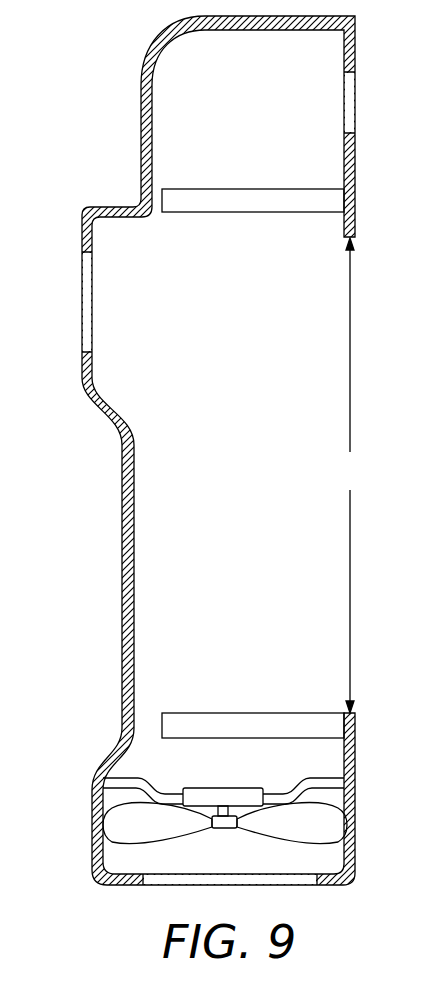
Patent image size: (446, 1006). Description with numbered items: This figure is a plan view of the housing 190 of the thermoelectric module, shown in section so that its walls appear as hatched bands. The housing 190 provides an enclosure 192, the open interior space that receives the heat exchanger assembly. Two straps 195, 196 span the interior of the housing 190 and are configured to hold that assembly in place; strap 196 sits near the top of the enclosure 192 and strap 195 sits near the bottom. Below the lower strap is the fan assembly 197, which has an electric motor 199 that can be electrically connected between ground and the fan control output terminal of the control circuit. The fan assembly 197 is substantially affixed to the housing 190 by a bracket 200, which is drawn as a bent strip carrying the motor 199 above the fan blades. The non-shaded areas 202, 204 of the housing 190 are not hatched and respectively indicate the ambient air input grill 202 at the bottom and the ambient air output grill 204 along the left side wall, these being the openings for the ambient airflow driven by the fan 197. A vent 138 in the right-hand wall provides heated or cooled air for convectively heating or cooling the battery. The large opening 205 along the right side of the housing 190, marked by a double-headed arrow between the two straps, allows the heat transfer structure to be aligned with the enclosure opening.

The vent 138 is at (357, 100).
The housing 190 is at (146, 431).
The enclosure 192 is at (203, 333).
The strap 195 is at (292, 721).
The strap 196 is at (190, 213).
The fan assembly 197 is at (222, 828).
The electric motor 199 is at (217, 793).
The bracket 200 is at (128, 782).
The ambient air input grill 202 is at (300, 878).
The ambient air output grill 204 is at (82, 303).
The opening 205 is at (352, 475).